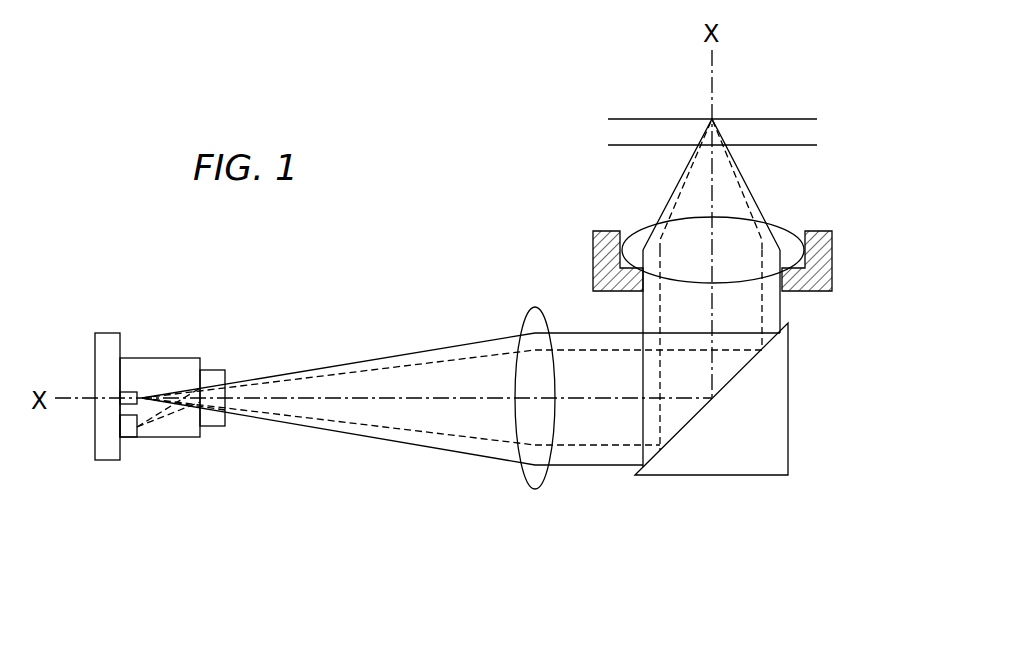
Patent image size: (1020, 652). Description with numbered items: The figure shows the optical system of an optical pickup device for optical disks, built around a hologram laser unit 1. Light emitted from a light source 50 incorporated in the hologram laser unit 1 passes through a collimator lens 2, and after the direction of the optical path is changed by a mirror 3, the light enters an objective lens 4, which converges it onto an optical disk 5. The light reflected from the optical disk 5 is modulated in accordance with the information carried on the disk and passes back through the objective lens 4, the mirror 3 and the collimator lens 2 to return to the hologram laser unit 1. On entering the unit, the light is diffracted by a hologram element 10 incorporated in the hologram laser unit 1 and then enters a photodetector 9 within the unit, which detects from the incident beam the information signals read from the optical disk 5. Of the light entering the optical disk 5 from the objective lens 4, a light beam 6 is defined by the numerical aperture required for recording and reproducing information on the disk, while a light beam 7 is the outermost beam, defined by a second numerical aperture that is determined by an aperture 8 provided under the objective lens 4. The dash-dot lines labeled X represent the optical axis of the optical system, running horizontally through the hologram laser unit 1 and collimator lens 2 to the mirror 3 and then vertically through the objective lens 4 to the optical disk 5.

The hologram laser unit 1 is at (172, 362).
The collimator lens 2 is at (525, 312).
The mirror 3 is at (721, 460).
The objective lens 4 is at (738, 240).
The optical disk 5 is at (632, 131).
The light beam 6 is at (680, 200).
The light beam 7 is at (752, 188).
The aperture 8 is at (818, 248).
The photodetector 9 is at (127, 437).
The hologram element 10 is at (210, 428).
The light source 50 is at (130, 392).